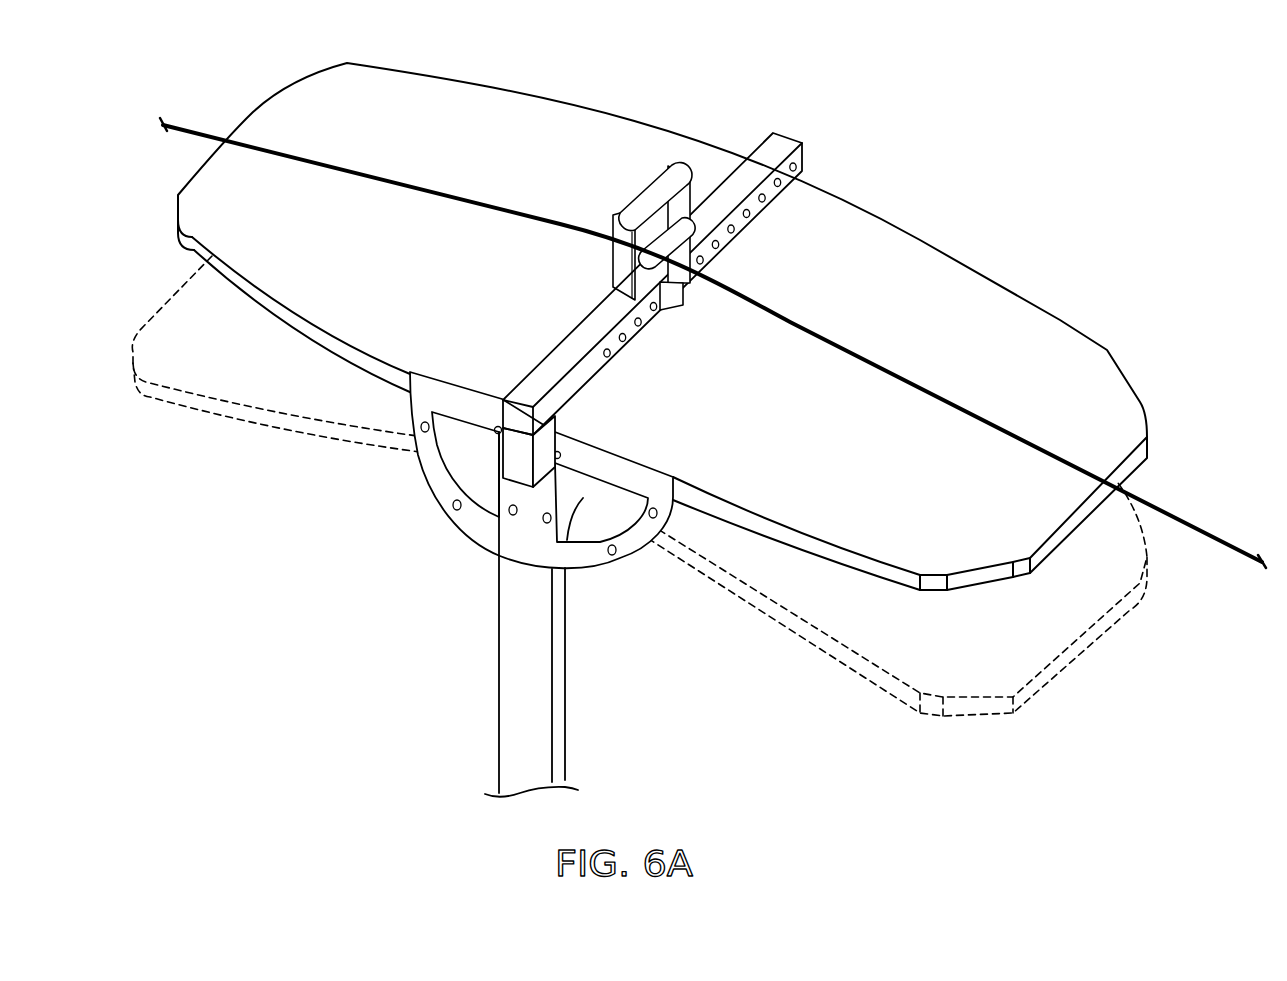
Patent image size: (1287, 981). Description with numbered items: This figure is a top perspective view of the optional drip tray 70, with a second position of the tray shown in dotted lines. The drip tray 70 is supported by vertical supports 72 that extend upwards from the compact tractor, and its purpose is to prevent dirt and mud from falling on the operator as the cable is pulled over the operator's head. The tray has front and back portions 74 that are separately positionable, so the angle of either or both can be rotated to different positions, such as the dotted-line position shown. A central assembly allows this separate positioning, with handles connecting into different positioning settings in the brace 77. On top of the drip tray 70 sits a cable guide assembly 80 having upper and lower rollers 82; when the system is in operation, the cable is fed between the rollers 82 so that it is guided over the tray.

The drip tray 70 is at (699, 420).
The vertical supports 72 is at (513, 672).
The front and back portions 74 is at (543, 126).
The brace 77 is at (485, 520).
The cable guide assembly 80 is at (692, 172).
The upper and lower rollers 82 is at (663, 250).